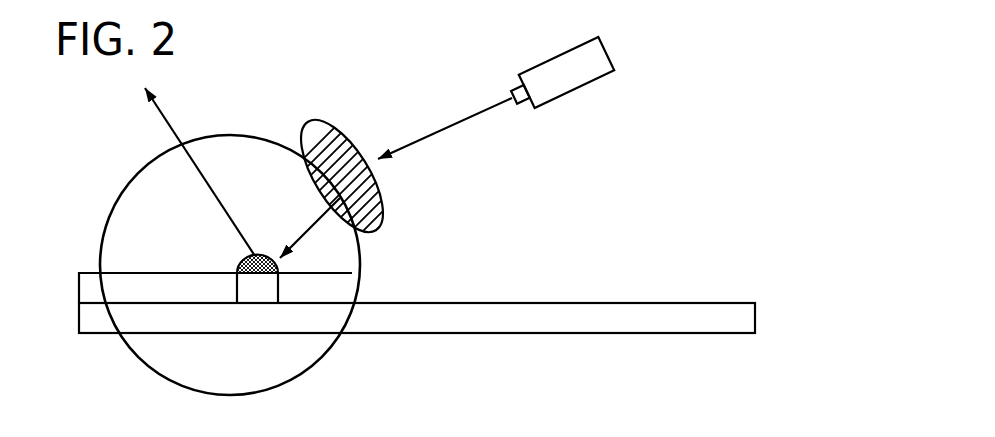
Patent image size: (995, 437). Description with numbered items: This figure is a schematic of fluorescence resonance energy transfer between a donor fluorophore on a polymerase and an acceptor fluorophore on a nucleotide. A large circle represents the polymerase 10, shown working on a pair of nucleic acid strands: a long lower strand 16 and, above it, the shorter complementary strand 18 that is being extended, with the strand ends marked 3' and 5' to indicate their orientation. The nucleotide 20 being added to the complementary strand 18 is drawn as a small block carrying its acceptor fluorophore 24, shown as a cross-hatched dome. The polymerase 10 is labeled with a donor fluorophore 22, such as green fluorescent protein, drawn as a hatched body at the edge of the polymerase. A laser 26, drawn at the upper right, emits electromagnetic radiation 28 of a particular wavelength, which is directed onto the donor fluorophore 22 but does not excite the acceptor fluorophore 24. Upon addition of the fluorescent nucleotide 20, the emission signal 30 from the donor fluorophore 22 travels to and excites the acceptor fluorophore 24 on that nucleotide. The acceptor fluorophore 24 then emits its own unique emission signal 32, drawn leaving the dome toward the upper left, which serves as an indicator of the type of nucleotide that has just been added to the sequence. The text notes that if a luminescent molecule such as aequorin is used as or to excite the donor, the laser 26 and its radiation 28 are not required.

The polymerase 10 is at (320, 353).
The substrate / DNA strand 16 is at (575, 320).
The complementary strand layer 18 is at (88, 273).
The nucleotide 20 is at (285, 275).
The donor fluorophore 22 is at (390, 202).
The acceptor fluorophore 24 is at (238, 267).
The laser 26 is at (590, 75).
The electromagnetic radiation 28 is at (447, 130).
The emission signal 30 is at (303, 235).
The emission signal 32 is at (223, 200).
The 3' end 3' is at (143, 301).
The 5' end 5' is at (420, 303).